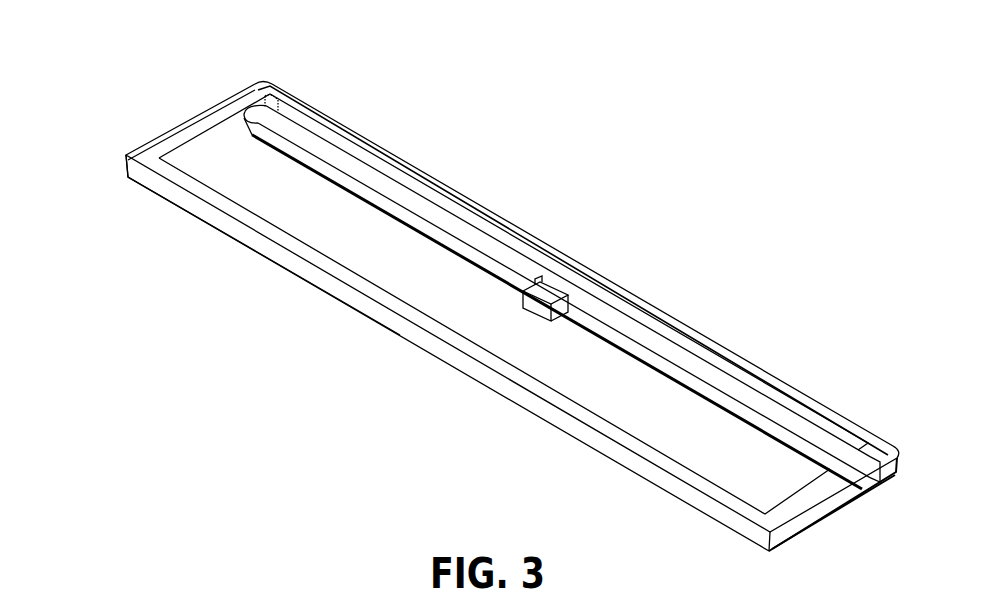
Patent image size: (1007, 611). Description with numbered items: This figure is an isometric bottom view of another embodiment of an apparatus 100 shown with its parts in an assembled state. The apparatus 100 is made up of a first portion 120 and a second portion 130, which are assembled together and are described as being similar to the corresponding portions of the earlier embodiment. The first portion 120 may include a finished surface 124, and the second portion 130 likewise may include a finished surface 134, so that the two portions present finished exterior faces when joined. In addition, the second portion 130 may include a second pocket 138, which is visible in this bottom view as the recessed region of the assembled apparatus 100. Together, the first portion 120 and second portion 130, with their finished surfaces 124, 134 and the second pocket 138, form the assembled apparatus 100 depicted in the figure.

The apparatus 100 is at (168, 76).
The first portion 120 is at (270, 68).
The finished surface 124 is at (884, 478).
The second portion 130 is at (110, 176).
The finished surface 134 is at (806, 519).
The second pocket 138 is at (513, 304).